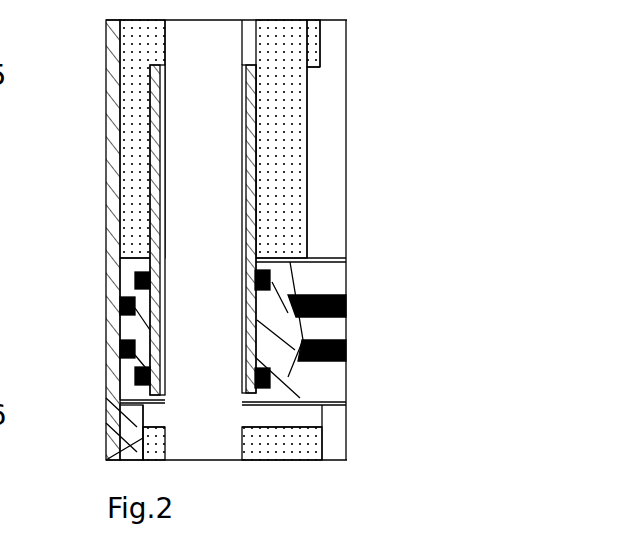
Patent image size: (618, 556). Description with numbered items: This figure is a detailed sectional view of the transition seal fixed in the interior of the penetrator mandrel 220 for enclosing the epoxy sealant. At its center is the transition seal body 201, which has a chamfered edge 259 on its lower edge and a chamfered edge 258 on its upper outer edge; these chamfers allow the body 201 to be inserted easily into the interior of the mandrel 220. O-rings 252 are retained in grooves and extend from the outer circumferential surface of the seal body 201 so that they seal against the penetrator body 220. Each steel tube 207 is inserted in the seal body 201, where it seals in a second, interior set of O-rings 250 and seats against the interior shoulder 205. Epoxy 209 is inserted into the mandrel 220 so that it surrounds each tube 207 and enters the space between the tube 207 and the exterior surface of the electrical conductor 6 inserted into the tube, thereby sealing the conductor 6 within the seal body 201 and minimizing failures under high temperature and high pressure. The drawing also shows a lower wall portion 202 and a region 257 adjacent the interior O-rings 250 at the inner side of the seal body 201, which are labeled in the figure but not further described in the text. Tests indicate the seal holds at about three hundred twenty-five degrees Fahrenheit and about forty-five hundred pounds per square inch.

The electrical conductor 6 is at (210, 171).
The transition seal body 201 is at (317, 403).
The bottom wall block 202 is at (140, 413).
The interior shoulder 205 is at (243, 386).
The steel tube 207 is at (327, 155).
The epoxy 209 is at (242, 97).
The penetrator mandrel 220 is at (118, 157).
The interior O-rings 250 is at (135, 378).
The O-rings 252 is at (120, 347).
The wedge piece 257 is at (245, 266).
The chamfered edge 258 is at (328, 259).
The chamfered edge 259 is at (305, 388).